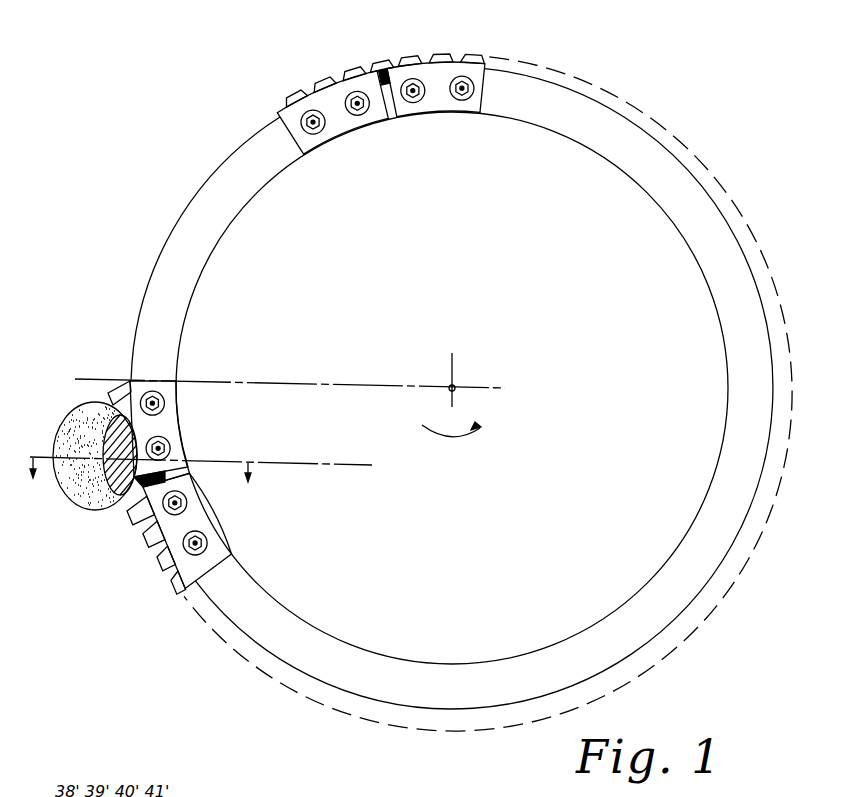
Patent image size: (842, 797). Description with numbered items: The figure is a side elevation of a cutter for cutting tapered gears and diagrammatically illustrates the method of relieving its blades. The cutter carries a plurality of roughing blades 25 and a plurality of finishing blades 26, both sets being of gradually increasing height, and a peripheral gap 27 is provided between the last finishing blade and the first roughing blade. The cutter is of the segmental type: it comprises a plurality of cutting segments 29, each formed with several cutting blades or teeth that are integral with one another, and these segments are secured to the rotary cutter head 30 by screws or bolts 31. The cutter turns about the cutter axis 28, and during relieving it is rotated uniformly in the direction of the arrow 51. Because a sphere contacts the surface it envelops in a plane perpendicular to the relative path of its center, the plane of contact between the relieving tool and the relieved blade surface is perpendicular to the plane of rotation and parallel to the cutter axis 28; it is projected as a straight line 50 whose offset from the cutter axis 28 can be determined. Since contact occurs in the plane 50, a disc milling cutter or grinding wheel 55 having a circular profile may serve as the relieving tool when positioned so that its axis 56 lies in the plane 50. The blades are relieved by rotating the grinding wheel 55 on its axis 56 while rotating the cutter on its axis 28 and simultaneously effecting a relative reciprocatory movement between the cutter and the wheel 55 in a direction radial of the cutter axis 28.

The roughing blades 25 is at (312, 92).
The finishing blades 26 is at (142, 506).
The peripheral gap 27 is at (160, 249).
The cutter axis 28 is at (455, 386).
The cutting segments 29 is at (418, 96).
The rotary cutter head 30 is at (177, 337).
The screws or bolts 31 is at (165, 403).
The plane of contact 50 is at (327, 465).
The arrow 51 is at (467, 437).
The grinding wheel 55 is at (66, 424).
The axis of grinding wheel 56 is at (104, 440).